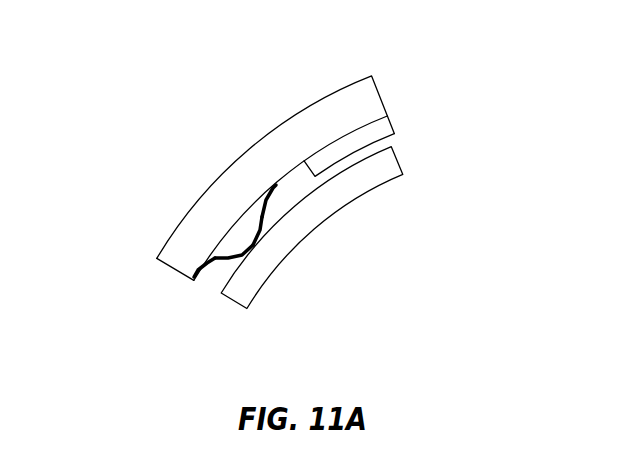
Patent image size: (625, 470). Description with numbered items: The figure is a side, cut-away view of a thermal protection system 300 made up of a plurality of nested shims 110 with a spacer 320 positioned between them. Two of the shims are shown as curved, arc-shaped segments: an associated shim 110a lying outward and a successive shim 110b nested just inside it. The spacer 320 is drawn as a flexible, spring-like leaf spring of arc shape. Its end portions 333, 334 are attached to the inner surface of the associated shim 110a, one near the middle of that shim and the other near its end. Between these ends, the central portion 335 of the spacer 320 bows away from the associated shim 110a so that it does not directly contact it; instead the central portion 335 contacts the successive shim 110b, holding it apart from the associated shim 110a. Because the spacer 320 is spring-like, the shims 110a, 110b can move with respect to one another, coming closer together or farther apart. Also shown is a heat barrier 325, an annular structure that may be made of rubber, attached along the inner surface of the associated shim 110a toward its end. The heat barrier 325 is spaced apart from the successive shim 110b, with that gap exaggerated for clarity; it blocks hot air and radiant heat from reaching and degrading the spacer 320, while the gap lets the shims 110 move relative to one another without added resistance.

The thermal protection system 300 is at (170, 115).
The shim 110 is at (363, 107).
The associated shim 110a is at (302, 140).
The successive shim 110b is at (350, 205).
The heat barrier 325 is at (382, 128).
The spacer 320 is at (261, 272).
The end portion 333 is at (276, 192).
The end portion 334 is at (165, 243).
The central portion 335 is at (247, 252).